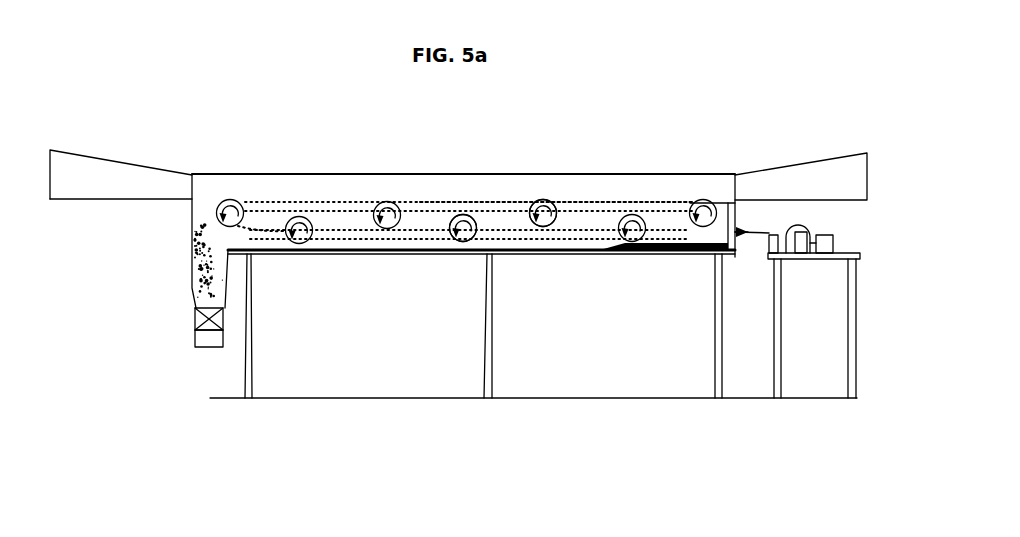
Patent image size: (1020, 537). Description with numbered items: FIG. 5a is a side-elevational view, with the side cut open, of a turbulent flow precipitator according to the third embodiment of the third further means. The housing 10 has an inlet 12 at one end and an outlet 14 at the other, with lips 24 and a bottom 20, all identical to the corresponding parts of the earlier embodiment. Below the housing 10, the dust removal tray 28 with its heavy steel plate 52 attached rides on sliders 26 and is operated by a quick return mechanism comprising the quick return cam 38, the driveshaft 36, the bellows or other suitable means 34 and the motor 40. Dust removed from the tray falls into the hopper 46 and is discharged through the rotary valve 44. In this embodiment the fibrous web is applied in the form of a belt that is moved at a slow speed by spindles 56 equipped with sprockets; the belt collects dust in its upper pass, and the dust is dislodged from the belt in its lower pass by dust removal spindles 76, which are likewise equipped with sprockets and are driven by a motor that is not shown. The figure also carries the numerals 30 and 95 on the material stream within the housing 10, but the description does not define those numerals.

The housing 10 is at (524, 237).
The inlet 12 is at (139, 229).
The outlet 14 is at (823, 154).
The bottom 20 is at (481, 272).
The lips 24 is at (386, 190).
The sliders 26 is at (483, 326).
The dust removal tray 28 is at (467, 325).
The material stream 30 is at (556, 273).
The bellows 34 is at (723, 331).
The driveshaft 36 is at (756, 185).
The quick return cam 38 is at (839, 234).
The motor 40 is at (839, 315).
The rotary valve 44 is at (151, 344).
The hopper 46 is at (156, 276).
The heavy steel plate 52 is at (758, 356).
The spindles 56 is at (606, 292).
The dust removal spindles 76 is at (442, 270).
The material layer 95 is at (465, 158).